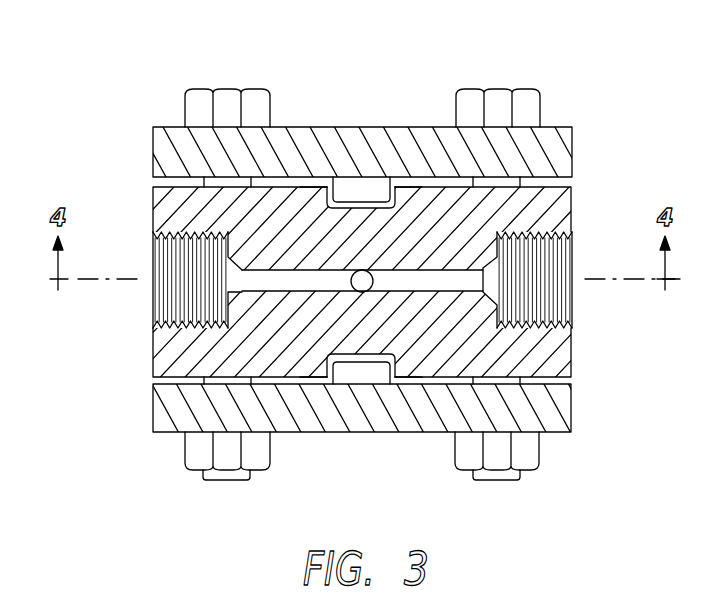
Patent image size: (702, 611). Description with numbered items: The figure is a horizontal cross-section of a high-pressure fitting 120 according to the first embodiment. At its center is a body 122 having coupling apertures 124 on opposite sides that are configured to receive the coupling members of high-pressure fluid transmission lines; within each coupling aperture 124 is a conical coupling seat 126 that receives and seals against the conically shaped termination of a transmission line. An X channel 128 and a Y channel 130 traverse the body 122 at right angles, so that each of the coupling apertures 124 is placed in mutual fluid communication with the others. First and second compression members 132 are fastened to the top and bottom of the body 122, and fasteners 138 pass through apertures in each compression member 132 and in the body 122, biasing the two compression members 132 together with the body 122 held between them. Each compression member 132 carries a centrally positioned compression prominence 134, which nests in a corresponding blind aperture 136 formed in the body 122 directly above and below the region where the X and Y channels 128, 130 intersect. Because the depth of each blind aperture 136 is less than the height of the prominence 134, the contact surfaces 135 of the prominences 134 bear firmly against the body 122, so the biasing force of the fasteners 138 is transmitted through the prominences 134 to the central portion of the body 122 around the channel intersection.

The high-pressure fitting 120 is at (108, 60).
The body 122 is at (293, 210).
The coupling apertures 124 is at (165, 342).
The conical coupling seats 126 is at (224, 300).
The X channel 128 is at (258, 274).
The Y channel 130 is at (369, 291).
The compression members 132 is at (565, 148).
The compression prominence 134 is at (352, 186).
The contact surfaces 135 is at (388, 218).
The blind apertures 136 is at (386, 203).
The fasteners 138 is at (228, 100).